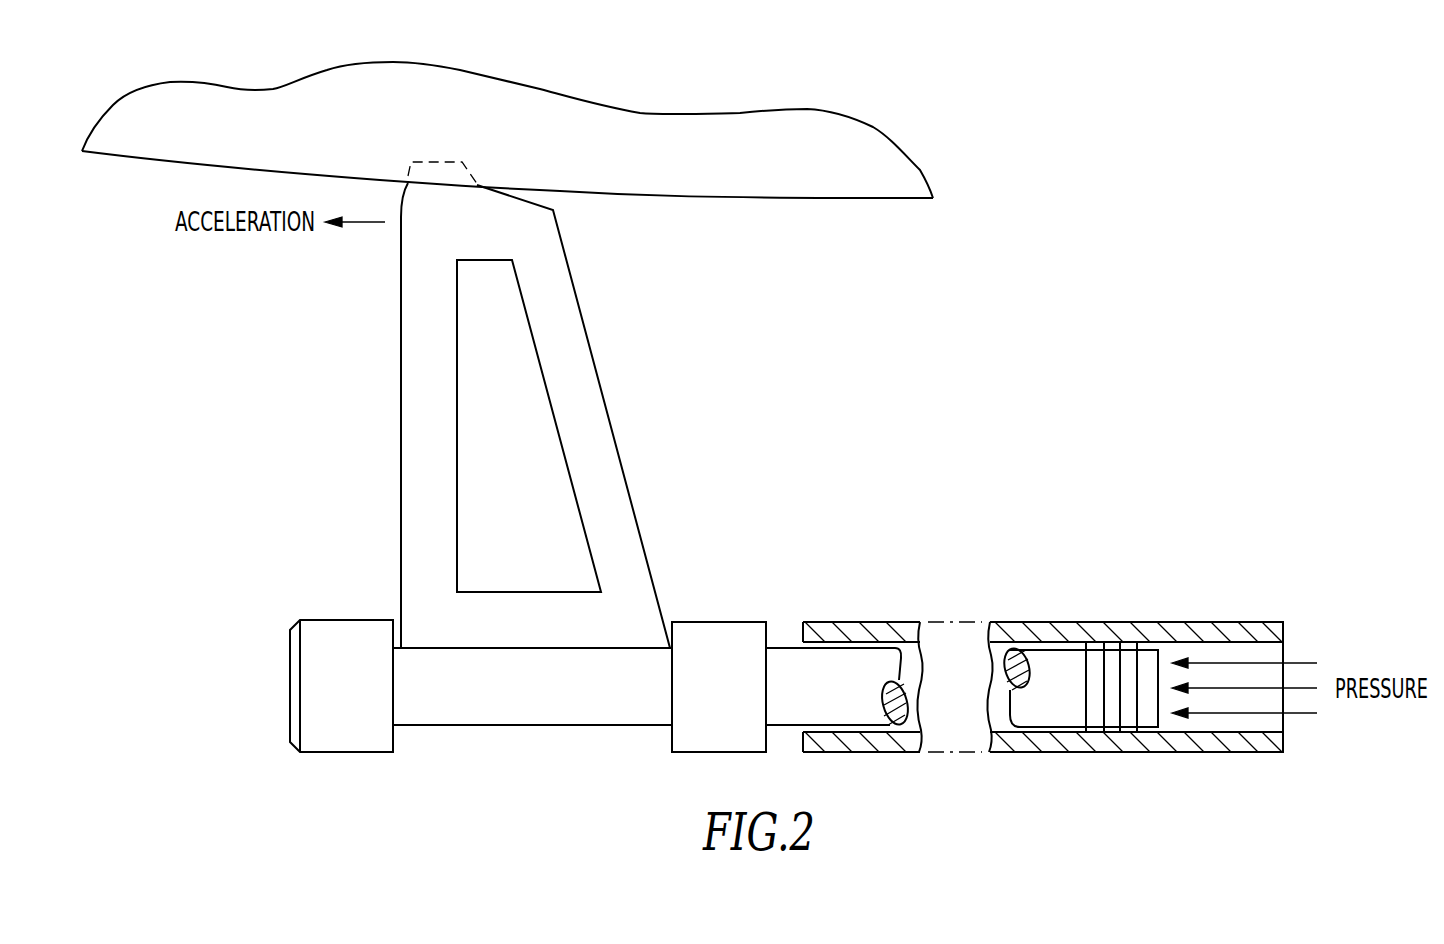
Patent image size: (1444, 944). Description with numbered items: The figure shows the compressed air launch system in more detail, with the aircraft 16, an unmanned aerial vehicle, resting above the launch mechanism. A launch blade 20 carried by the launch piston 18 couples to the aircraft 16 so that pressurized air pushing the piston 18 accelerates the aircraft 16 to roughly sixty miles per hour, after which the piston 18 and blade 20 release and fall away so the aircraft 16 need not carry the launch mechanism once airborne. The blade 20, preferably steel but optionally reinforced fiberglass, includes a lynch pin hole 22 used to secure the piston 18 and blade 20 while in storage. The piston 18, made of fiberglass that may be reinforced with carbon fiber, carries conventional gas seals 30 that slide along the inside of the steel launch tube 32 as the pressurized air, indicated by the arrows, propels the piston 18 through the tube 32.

The aircraft 16 is at (765, 185).
The launch piston 18 is at (882, 658).
The launch blade 20 is at (413, 377).
The lynch pin hole 22 is at (540, 601).
The gas seals 30 is at (1127, 657).
The launch tube 32 is at (1202, 745).